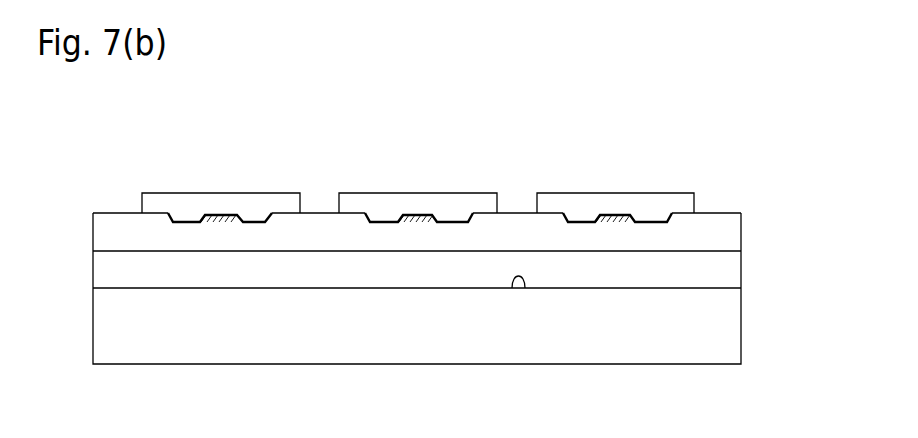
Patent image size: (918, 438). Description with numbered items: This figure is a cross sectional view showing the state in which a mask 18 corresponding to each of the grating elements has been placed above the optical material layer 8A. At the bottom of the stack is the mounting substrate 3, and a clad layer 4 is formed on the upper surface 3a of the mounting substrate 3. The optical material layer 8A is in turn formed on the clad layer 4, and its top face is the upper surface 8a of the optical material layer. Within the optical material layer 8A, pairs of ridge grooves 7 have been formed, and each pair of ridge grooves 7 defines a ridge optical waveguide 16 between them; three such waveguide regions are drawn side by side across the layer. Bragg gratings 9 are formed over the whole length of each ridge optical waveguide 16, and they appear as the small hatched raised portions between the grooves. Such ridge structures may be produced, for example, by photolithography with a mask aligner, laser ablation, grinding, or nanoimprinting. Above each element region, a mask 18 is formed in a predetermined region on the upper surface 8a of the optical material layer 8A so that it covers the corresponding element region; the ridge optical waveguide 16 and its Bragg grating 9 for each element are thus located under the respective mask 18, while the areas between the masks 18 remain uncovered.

The mounting substrate 3 is at (723, 330).
The upper surface of the mounting substrate 3a is at (524, 287).
The clad layer 4 is at (717, 270).
The optical material layer 8A is at (717, 233).
The upper surface of the optical material layer 8a is at (741, 212).
The ridge groove 7 is at (185, 222).
The Bragg grating 9 is at (218, 215).
The ridge optical waveguide 16 is at (417, 222).
The mask 18 is at (290, 193).